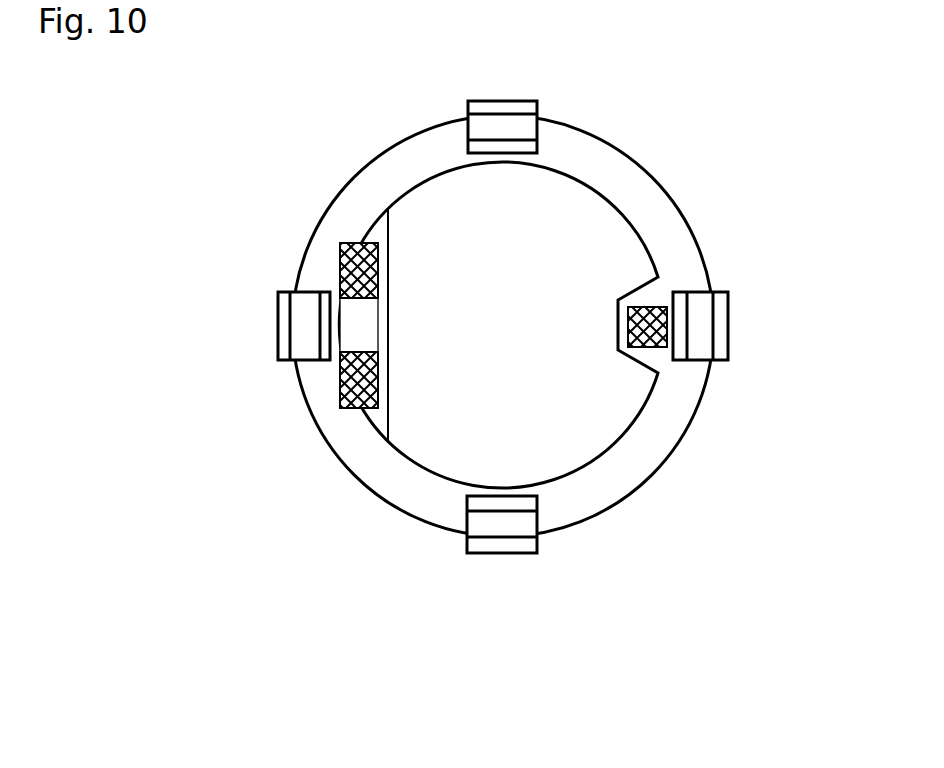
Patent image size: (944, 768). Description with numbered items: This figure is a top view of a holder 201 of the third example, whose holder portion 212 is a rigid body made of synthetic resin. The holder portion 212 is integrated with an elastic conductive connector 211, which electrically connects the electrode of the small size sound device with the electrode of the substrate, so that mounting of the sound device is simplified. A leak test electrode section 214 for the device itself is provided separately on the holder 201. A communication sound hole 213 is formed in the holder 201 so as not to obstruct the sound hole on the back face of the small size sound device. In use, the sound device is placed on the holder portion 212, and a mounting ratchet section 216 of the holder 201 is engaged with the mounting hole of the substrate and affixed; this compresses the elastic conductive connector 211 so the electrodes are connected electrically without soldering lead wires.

The holder 201 is at (250, 257).
The elastic conductive connector 211 is at (340, 262).
The holder portion 212 is at (702, 313).
The communication sound hole 213 is at (595, 410).
The leak test electrode section 214 is at (662, 307).
The mounting ratchet section 216 is at (725, 338).